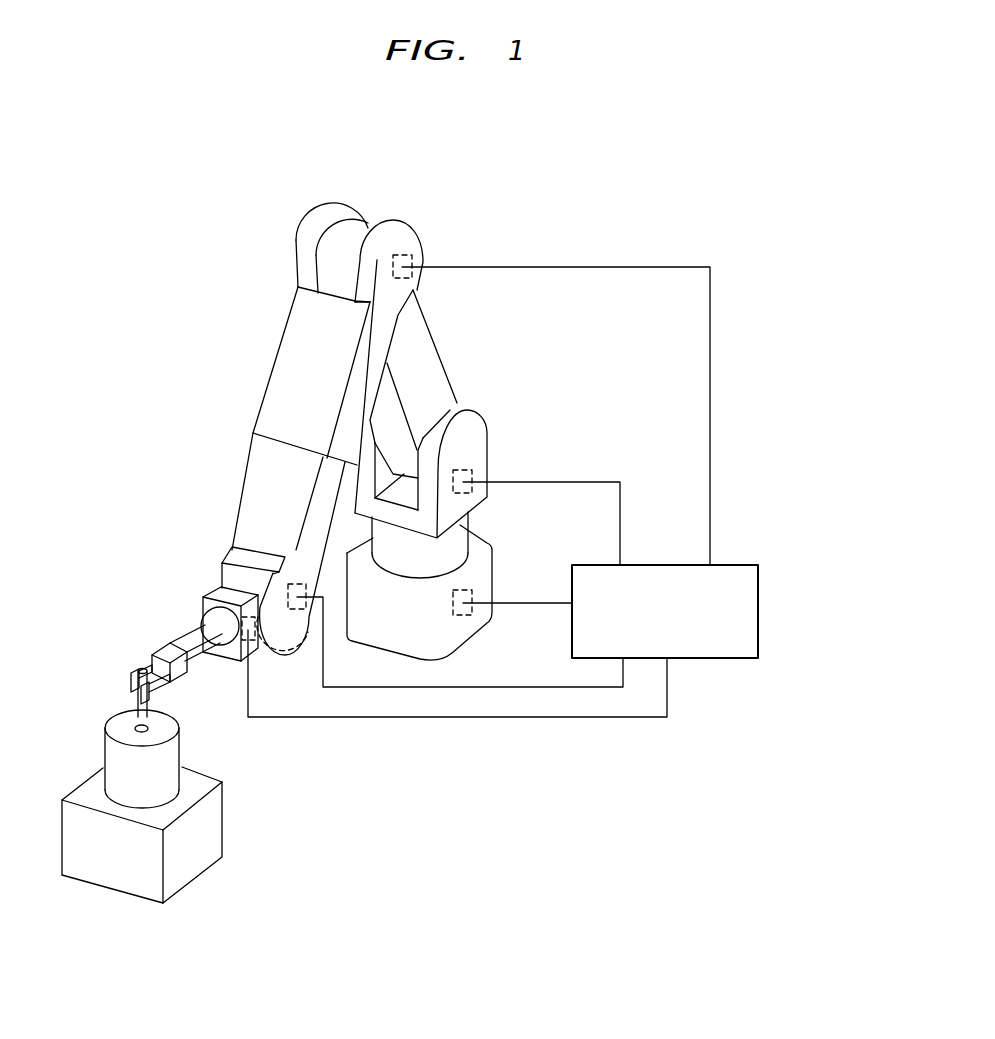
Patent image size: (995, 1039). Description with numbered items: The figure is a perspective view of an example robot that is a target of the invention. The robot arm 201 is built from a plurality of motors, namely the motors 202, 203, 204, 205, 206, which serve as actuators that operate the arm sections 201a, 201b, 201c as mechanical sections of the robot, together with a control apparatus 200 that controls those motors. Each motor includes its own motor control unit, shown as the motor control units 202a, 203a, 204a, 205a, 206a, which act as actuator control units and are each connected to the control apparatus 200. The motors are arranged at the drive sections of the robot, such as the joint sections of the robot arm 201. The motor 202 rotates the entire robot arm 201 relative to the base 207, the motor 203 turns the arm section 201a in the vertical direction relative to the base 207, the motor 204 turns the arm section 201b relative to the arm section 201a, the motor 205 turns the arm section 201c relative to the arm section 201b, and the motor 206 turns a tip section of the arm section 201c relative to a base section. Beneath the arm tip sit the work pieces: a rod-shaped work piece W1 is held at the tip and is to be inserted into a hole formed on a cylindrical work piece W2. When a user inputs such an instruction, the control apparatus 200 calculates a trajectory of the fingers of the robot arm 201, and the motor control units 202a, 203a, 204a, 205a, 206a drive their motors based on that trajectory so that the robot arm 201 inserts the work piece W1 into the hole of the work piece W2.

The control apparatus 200 is at (758, 606).
The robot arm 201 is at (563, 160).
The arm section 201a is at (430, 346).
The arm section 201b is at (284, 377).
The arm section 201c is at (183, 642).
The motor 202 is at (462, 533).
The motor control unit 202a is at (474, 594).
The motor 203 is at (469, 438).
The motor control unit 203a is at (474, 474).
The motor 204 is at (424, 244).
The motor control unit 204a is at (402, 253).
The motor 205 is at (245, 549).
The motor control unit 205a is at (297, 583).
The motor 206 is at (212, 592).
The motor control unit 206a is at (257, 640).
The base 207 is at (458, 630).
The rod-shaped work piece W1 is at (140, 670).
The cylindrical work piece W2 is at (160, 775).